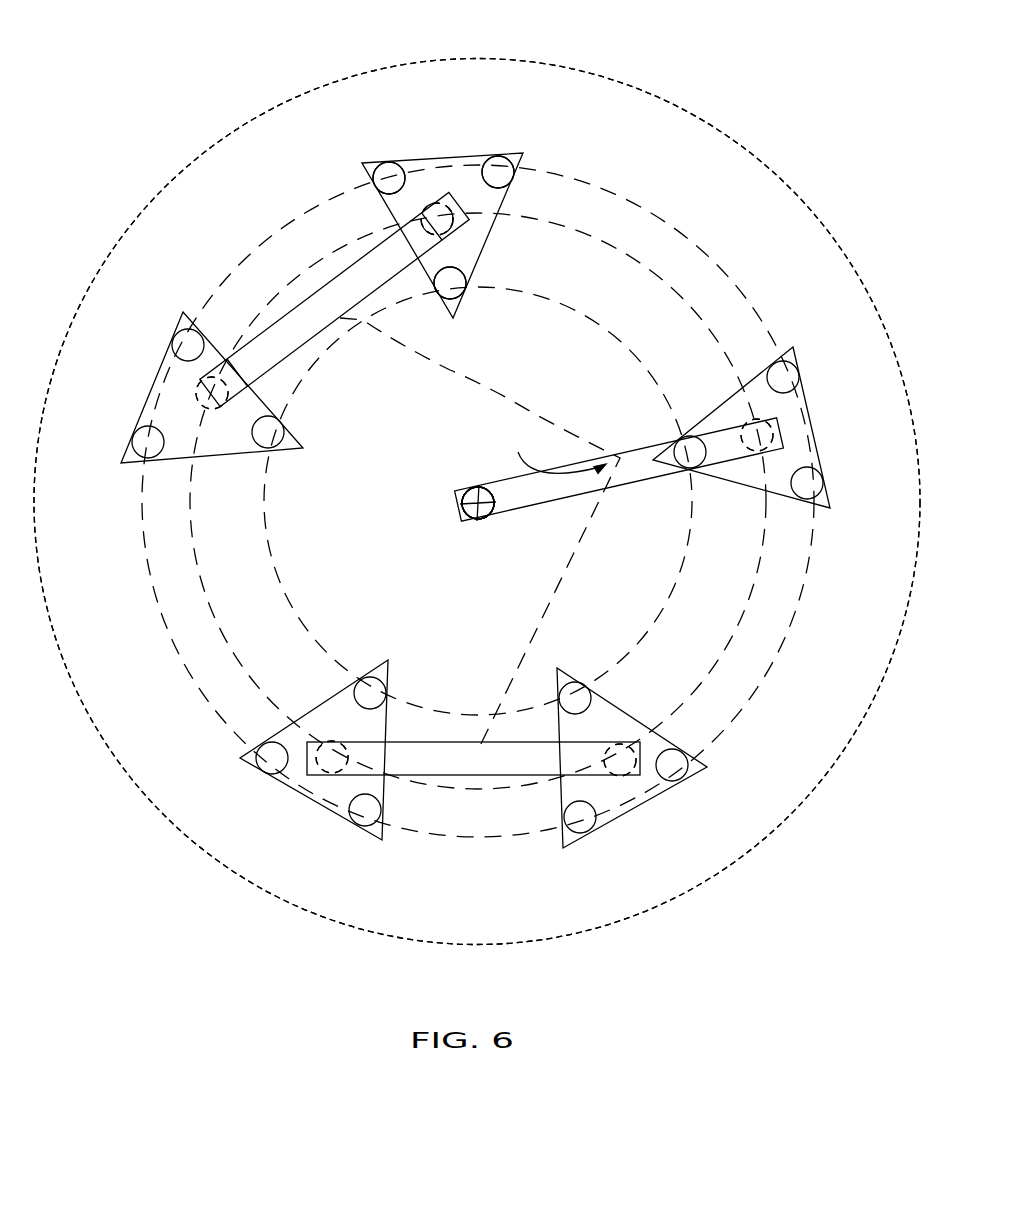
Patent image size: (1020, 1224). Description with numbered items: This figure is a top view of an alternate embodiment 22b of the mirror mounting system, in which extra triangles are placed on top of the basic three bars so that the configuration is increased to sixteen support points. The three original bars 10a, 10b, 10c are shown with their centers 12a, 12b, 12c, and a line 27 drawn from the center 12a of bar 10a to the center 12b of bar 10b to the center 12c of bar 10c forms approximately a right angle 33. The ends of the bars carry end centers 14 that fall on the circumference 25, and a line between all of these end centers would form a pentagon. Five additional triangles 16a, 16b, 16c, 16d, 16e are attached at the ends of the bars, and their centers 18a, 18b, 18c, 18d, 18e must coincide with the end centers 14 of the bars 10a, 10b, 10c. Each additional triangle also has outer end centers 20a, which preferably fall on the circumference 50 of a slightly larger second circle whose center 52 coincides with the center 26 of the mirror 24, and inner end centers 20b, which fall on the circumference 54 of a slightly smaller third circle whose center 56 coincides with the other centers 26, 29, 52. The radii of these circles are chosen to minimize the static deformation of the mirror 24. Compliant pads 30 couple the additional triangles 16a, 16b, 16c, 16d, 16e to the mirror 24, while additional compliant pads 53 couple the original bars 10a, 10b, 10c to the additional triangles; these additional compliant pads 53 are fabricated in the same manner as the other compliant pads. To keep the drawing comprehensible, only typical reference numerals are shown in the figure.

The alternate embodiment 22b is at (711, 98).
The mirror 24 is at (762, 197).
The circumference of second circle 50 is at (763, 687).
The circumference 25 is at (752, 608).
The circumference of third circle 54 is at (697, 535).
The line 27 is at (415, 378).
The original bar 10a is at (326, 286).
The center of bar 10a 12a is at (340, 307).
The additional triangle 16a is at (482, 206).
The compliant pads 30 is at (375, 170).
The outer end centers 20a is at (380, 165).
The inner end centers 20b is at (437, 284).
The center of additional triangle 18a is at (440, 205).
The additional compliant pads 53 is at (453, 223).
The additional triangle 16e is at (177, 440).
The center of additional triangle 18e is at (190, 390).
The original bar 10b is at (619, 457).
The center of bar 10b 12b is at (620, 465).
The additional triangle 16b is at (805, 400).
The center of additional triangle 18b is at (757, 435).
The end centers 14 is at (453, 507).
The center of mirror 26 is at (396, 530).
The center 29 is at (396, 530).
The center of second circle 52 is at (396, 530).
The center of third circle 56 is at (396, 530).
The right angle 33 is at (552, 449).
The original bar 10c is at (473, 818).
The center of bar 10c 12c is at (477, 753).
The additional triangle 16c is at (610, 722).
The additional triangle 16d is at (330, 717).
The center of additional triangle 18c is at (627, 773).
The center of additional triangle 18d is at (333, 757).